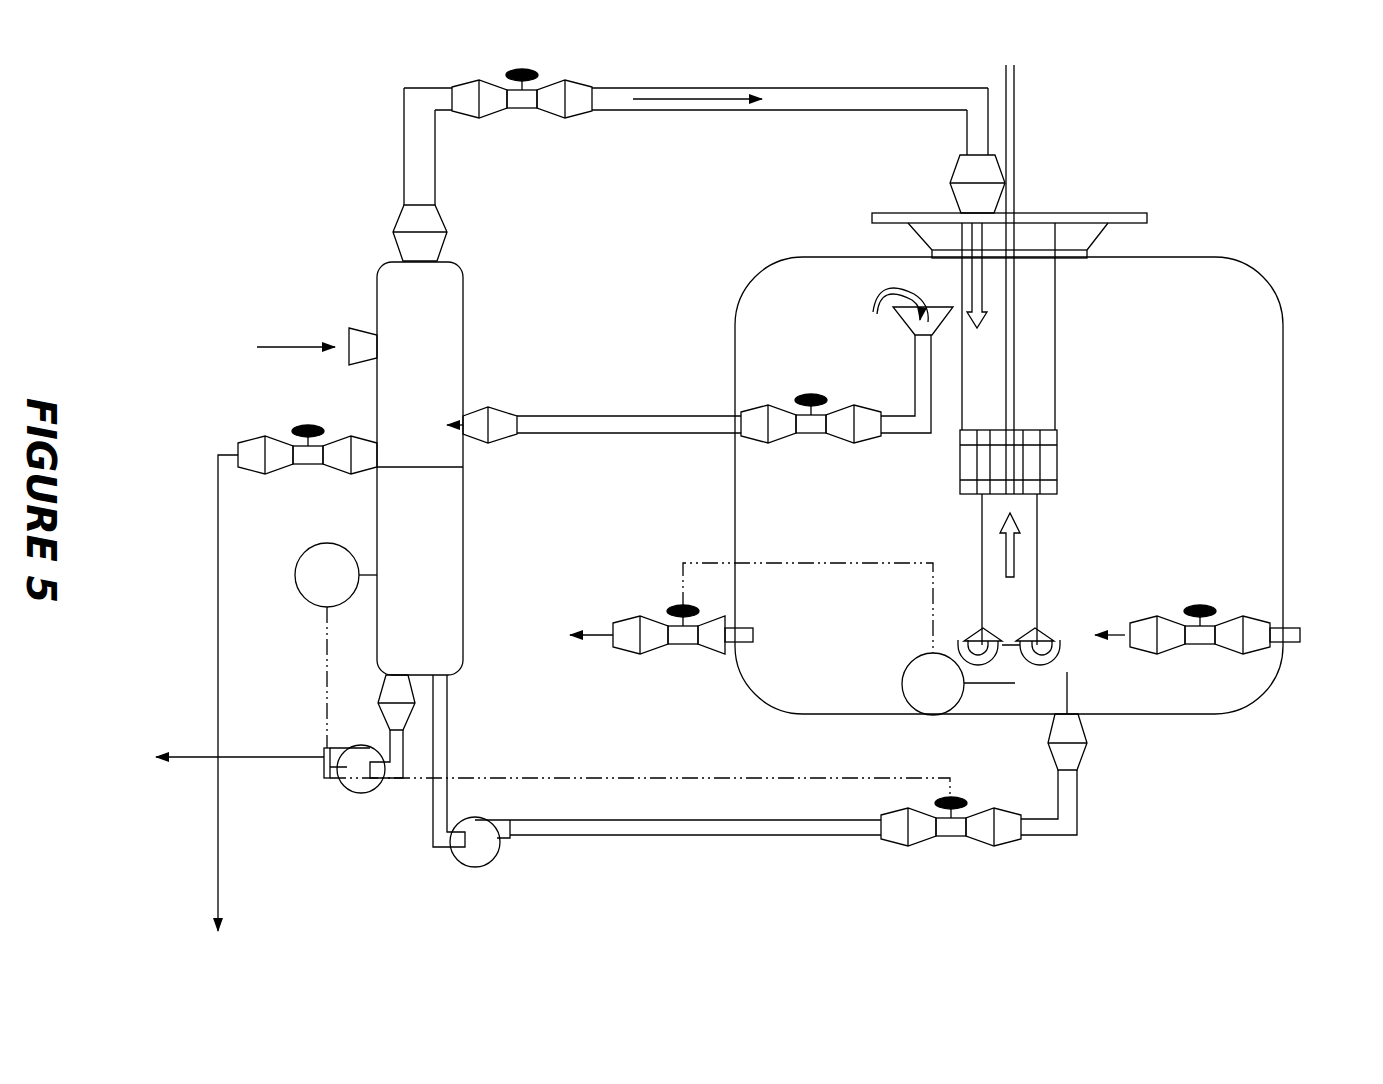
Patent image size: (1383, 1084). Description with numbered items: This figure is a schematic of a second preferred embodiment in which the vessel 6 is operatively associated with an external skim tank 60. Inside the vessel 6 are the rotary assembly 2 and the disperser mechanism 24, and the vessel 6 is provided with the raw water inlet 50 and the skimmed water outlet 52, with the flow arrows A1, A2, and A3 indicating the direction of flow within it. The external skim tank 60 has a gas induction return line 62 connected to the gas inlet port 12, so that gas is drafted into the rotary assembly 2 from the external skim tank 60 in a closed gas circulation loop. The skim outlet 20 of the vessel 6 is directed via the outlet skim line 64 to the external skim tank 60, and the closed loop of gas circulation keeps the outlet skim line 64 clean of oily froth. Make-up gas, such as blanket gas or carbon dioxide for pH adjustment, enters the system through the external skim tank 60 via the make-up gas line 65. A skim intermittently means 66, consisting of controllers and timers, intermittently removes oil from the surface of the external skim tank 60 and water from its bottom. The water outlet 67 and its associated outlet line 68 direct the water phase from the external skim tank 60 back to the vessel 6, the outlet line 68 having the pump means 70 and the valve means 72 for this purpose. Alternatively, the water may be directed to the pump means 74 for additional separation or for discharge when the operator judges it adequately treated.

The rotary assembly 2 is at (1040, 116).
The vessel 6 is at (1286, 312).
The gas inlet port 12 is at (970, 197).
The skim outlet 20 is at (733, 415).
The disperser mechanism 24 is at (1058, 453).
The raw water inlet 50 is at (1300, 634).
The skimmed water outlet 52 is at (740, 642).
The external skim tank 60 is at (385, 287).
The gas induction return line 62 is at (612, 108).
The outlet skim line 64 is at (598, 425).
The make-up gas line 65 is at (352, 337).
The skim intermittently means 66 is at (275, 450).
The water outlet 67 is at (440, 682).
The outlet line 68 is at (438, 795).
The pump means 70 is at (478, 850).
The valve means 72 is at (953, 830).
The pump means 74 is at (360, 786).
The flow arrow A1 is at (1047, 647).
The flow arrow A2 is at (958, 648).
The flow arrow A3 is at (1007, 543).